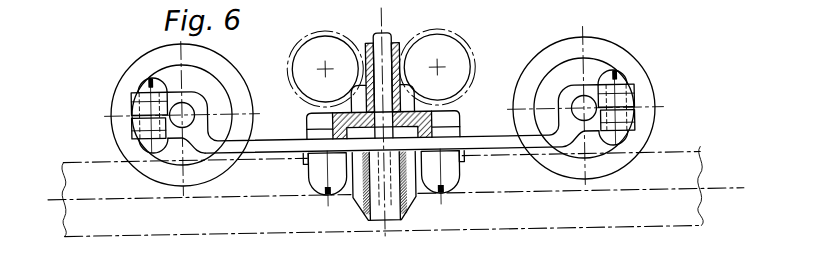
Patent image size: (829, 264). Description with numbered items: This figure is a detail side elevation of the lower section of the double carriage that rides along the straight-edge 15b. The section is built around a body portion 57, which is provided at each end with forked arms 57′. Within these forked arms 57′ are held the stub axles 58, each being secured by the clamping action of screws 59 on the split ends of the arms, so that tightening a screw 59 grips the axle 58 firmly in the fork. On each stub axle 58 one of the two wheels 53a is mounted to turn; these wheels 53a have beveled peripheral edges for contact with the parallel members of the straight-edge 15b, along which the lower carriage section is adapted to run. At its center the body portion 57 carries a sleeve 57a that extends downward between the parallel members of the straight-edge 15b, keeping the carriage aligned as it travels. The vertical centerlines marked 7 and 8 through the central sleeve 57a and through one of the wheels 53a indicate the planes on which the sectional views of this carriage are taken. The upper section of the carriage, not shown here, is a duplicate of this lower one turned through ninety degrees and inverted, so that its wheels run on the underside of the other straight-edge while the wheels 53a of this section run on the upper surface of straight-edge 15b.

The wheels 53a is at (233, 70).
The body portion 57 is at (276, 150).
The forked arms 57′ is at (235, 147).
The sleeve 57a is at (402, 207).
The stub axles 58 is at (177, 119).
The screws 59 is at (144, 76).
The straight-edge 15b is at (213, 233).
The section line 7 is at (377, 130).
The section line 8 is at (580, 107).